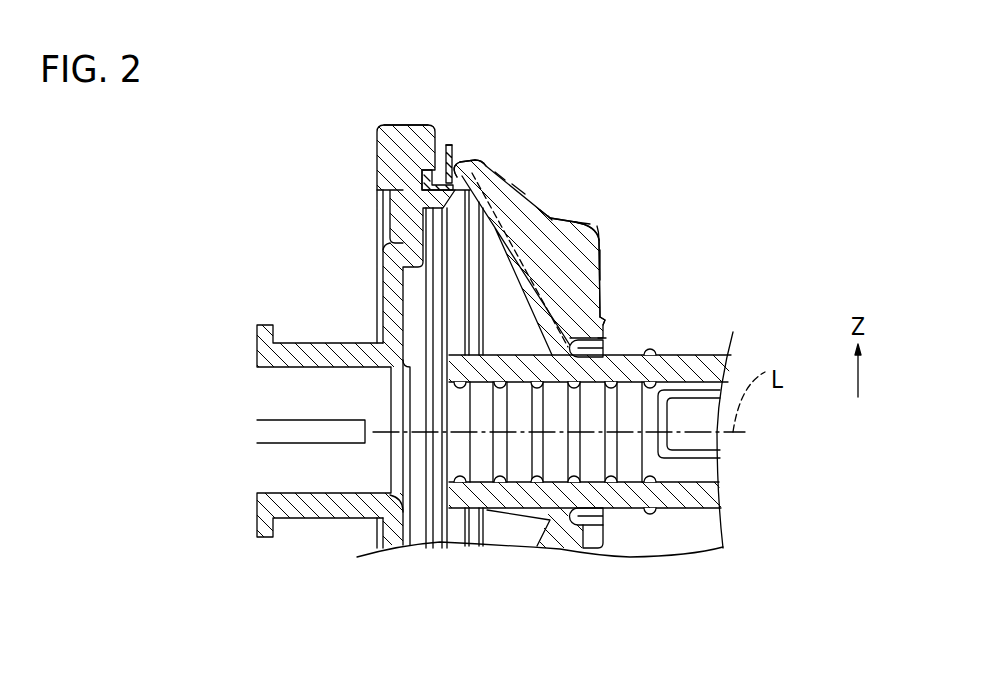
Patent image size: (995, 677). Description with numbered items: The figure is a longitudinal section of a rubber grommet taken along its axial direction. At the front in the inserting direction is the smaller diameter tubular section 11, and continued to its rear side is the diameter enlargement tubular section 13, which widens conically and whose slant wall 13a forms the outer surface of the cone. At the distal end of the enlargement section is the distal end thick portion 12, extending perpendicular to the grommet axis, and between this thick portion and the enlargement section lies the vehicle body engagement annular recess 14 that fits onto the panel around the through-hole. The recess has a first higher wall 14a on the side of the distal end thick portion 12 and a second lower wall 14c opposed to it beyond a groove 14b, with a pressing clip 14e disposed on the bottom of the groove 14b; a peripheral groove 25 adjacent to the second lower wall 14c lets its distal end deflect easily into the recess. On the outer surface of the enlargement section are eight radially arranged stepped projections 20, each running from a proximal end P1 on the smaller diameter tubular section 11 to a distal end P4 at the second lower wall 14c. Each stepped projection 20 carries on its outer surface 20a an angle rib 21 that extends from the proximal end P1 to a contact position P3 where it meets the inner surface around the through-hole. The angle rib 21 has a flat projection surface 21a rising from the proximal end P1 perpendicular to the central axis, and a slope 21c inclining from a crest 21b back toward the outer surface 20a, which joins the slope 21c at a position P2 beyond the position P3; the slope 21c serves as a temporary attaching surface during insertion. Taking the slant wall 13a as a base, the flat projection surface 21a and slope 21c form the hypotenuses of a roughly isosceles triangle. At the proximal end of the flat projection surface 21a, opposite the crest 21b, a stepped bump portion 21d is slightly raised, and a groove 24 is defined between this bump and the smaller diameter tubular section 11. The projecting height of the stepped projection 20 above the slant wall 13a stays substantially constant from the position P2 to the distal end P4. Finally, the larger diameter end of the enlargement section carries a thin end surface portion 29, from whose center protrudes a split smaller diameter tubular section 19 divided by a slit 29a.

The smaller diameter tubular section 11 is at (688, 513).
The distal end thick portion 12 is at (376, 133).
The diameter enlargement tubular section 13 is at (528, 200).
The slant wall 13a is at (538, 258).
The vehicle body engagement annular recess 14 is at (450, 141).
The first higher wall 14a is at (402, 125).
The groove 14b is at (441, 140).
The second lower wall 14c is at (456, 160).
The pressing clip 14e is at (422, 193).
The split smaller diameter tubular section 19 is at (297, 343).
The stepped projection 20 is at (548, 212).
The outer surface 20a is at (518, 192).
The angle rib 21 is at (560, 236).
The flat projection surface 21a is at (600, 262).
The crest 21b is at (598, 232).
The slope 21c is at (585, 218).
The stepped bump portion 21d is at (605, 320).
The groove 24 is at (603, 349).
The peripheral groove 25 is at (474, 162).
The thin end surface portion 29 is at (377, 253).
The slit 29a is at (288, 450).
The proximal end P1 is at (603, 344).
The position P2 is at (545, 213).
The contact position P3 is at (500, 180).
The distal end P4 is at (459, 158).